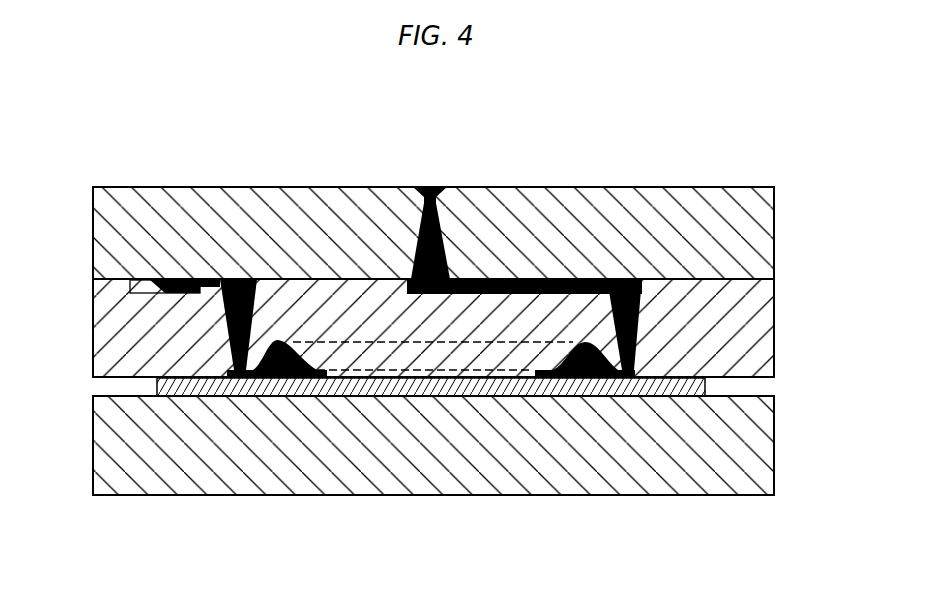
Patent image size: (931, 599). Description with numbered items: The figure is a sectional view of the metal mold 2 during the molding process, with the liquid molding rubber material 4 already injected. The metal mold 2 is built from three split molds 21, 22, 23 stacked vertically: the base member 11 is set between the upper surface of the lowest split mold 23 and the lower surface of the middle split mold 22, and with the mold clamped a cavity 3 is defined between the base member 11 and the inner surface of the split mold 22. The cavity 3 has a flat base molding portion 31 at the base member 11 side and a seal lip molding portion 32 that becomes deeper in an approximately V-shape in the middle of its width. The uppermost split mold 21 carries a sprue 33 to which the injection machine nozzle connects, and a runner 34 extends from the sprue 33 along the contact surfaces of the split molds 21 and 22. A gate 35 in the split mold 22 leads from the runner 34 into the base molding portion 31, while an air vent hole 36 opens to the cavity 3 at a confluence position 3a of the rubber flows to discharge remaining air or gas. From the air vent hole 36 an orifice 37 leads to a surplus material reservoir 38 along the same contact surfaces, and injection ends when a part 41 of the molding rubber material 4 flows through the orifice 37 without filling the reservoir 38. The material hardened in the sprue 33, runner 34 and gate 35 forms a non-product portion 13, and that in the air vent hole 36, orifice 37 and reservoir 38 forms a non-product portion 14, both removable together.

The metal mold 2 is at (713, 172).
The cavity 3 is at (580, 386).
The confluence position 3a is at (262, 378).
The liquid molding rubber material 4 is at (430, 178).
The base member 11 is at (413, 398).
The non-product portion 13 is at (645, 310).
The non-product portion 14 is at (183, 271).
The split mold 21 is at (668, 217).
The split mold 22 is at (736, 314).
The split mold 23 is at (720, 448).
The base molding portion 31 is at (634, 378).
The seal lip molding portion 32 is at (588, 341).
The sprue 33 is at (425, 187).
The runner 34 is at (532, 278).
The gate 35 is at (630, 365).
The air vent hole 36 is at (257, 303).
The orifice 37 is at (207, 277).
The surplus material reservoir 38 is at (130, 282).
The part of the molding rubber material 41 is at (167, 300).